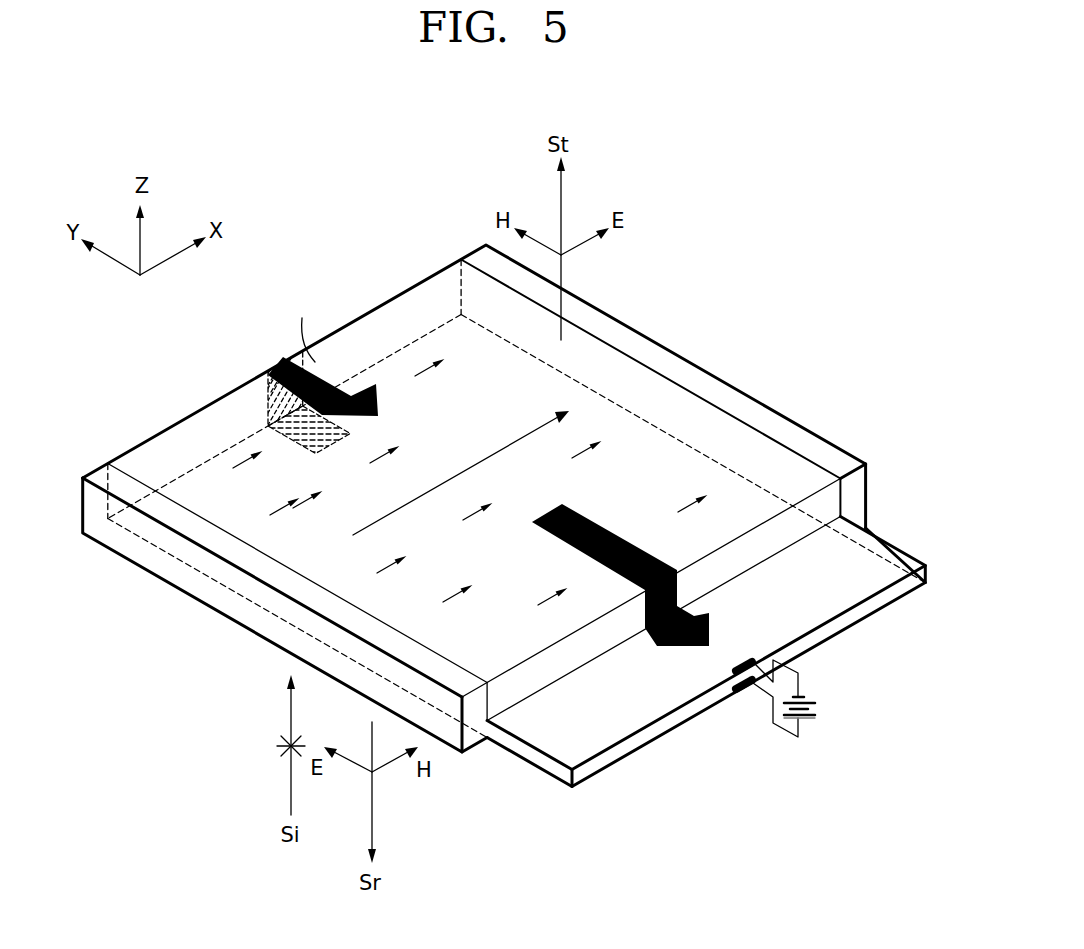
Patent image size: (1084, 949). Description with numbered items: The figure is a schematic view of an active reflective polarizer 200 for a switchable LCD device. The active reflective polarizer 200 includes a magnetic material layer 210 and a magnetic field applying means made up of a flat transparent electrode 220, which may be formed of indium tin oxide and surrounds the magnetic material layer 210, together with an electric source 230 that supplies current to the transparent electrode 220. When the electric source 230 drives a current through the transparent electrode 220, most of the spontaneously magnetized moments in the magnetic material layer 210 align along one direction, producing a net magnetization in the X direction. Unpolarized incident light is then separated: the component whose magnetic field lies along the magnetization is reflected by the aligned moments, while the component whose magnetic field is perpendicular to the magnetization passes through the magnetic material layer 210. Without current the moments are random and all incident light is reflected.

The active reflective polarizer 200 is at (740, 284).
The magnetic material layer 210 is at (167, 570).
The transparent electrode 220 is at (883, 548).
The electric source 230 is at (838, 715).